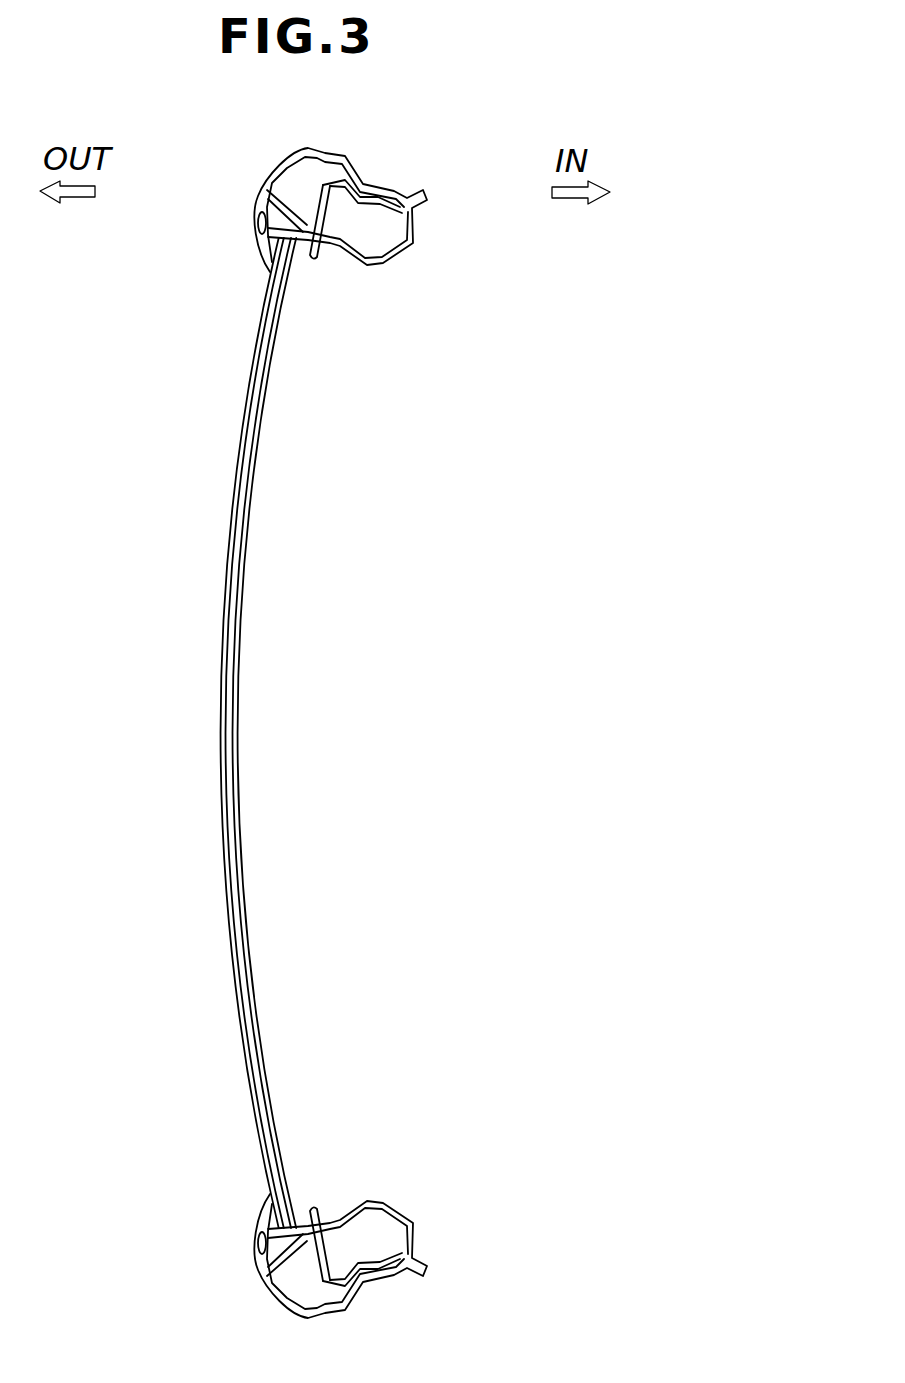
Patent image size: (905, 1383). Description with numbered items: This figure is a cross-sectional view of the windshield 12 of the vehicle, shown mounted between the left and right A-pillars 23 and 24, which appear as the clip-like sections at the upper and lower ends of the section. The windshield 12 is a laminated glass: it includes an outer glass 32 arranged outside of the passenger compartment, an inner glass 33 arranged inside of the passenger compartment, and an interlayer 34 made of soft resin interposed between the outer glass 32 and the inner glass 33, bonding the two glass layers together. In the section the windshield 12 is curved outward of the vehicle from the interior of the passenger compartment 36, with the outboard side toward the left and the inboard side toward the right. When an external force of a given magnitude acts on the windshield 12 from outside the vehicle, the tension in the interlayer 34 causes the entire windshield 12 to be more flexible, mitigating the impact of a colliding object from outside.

The windshield 12 is at (221, 733).
The left A-pillar 23 is at (412, 1228).
The right A-pillar 24 is at (413, 247).
The outer glass 32 is at (222, 809).
The inner glass 33 is at (240, 809).
The interlayer 34 is at (246, 987).
The passenger compartment 36 is at (543, 680).